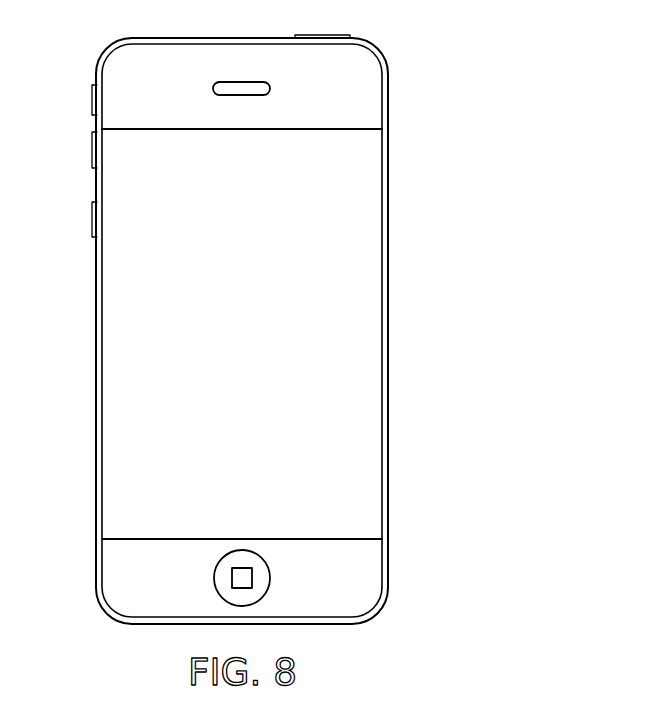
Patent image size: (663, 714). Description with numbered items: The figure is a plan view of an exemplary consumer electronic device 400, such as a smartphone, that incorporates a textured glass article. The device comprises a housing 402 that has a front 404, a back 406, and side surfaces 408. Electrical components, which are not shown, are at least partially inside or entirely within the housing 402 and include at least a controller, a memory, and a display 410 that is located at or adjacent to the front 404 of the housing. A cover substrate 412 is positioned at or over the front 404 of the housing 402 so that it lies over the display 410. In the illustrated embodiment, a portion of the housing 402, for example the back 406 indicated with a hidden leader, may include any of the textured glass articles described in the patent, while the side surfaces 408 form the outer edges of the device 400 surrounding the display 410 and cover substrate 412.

The consumer electronic device 400 is at (322, 329).
The housing 402 is at (108, 112).
The front surface 404 is at (366, 587).
The back surface 406 is at (140, 284).
The side surfaces 408 is at (391, 392).
The display 410 is at (363, 252).
The cover substrate 412 is at (110, 350).